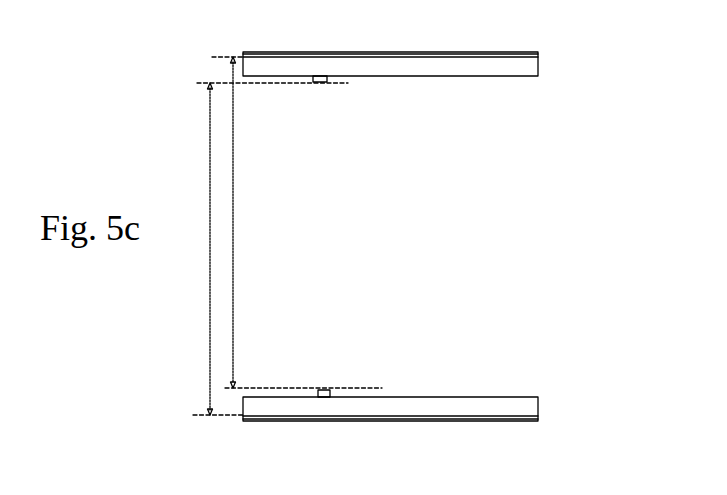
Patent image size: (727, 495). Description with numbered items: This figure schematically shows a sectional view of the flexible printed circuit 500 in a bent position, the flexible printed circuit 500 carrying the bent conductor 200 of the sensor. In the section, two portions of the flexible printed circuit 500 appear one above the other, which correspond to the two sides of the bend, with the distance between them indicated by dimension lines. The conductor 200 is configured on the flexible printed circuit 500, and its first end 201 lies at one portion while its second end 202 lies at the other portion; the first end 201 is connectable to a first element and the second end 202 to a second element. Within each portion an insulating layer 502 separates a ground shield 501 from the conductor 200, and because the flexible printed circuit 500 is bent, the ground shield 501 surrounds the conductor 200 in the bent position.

The flexible printed circuit 500 is at (538, 66).
The ground shield 501 is at (262, 55).
The insulating layer 502 is at (422, 63).
The second end 202 is at (483, 52).
The first end 201 is at (243, 420).
The conductor 200 is at (317, 83).